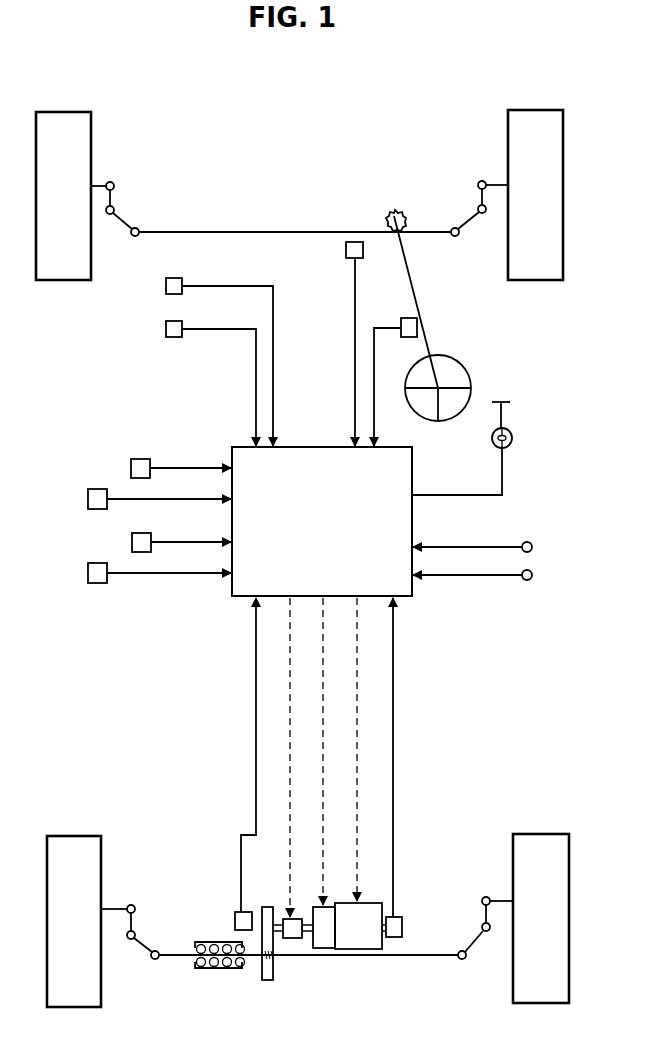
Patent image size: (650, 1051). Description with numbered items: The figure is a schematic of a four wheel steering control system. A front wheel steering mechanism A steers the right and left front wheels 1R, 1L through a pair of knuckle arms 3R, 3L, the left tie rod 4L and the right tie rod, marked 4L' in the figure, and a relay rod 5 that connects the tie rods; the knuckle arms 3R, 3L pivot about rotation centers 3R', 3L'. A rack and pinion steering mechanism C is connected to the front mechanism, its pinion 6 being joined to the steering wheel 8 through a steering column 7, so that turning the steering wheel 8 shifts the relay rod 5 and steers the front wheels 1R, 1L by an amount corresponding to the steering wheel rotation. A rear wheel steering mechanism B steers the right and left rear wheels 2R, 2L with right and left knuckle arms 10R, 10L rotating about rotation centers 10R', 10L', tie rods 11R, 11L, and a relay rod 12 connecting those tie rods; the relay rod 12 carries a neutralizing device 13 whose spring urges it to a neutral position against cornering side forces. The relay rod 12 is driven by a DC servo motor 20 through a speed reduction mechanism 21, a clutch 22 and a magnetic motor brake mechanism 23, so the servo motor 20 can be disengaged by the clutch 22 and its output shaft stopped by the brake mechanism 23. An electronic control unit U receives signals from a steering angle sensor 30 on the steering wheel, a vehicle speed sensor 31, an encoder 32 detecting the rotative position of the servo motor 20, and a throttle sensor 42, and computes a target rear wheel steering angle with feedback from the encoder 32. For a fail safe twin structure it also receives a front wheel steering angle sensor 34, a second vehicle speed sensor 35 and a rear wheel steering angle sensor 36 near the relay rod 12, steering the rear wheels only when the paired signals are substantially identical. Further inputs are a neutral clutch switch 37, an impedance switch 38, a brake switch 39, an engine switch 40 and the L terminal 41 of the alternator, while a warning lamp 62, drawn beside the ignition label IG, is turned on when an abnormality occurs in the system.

The left front wheel 1L is at (76, 112).
The right front wheel 1R is at (530, 110).
The left rear wheel 2L is at (72, 836).
The right rear wheel 2R is at (542, 834).
The knuckle arm 3L is at (140, 192).
The rotation center 3L' is at (129, 154).
The knuckle arm 3R is at (452, 190).
The rotation center 3R' is at (471, 155).
The tie rod 4L is at (149, 219).
The right front tie rod 4L' is at (475, 241).
The relay rod 5 is at (258, 231).
The pinion 6 is at (394, 209).
The steering column 7 is at (417, 292).
The steering wheel 8 is at (470, 368).
The knuckle arm 10L is at (467, 900).
The rotation center 10L' is at (487, 870).
The knuckle arm 10R is at (158, 904).
The rotation center 10R' is at (128, 877).
The tie rod 11L is at (479, 936).
The tie rod 11R is at (140, 946).
The relay rod 12 is at (405, 957).
The neutralizing device 13 is at (217, 976).
The DC servo motor 20 is at (366, 902).
The speed reduction mechanism 21 is at (262, 942).
The clutch 22 is at (292, 940).
The magnetic motor brake mechanism 23 is at (327, 950).
The steering angle sensor 30 is at (404, 318).
The vehicle speed sensor 31 is at (185, 278).
The encoder 32 is at (404, 916).
The front wheel steering angle sensor 34 is at (345, 250).
The second vehicle speed sensor 35 is at (175, 338).
The rear wheel steering angle sensor 36 is at (235, 918).
The neutral clutch switch 37 is at (150, 460).
The impedance switch 38 is at (96, 489).
The brake switch 39 is at (132, 542).
The engine switch 40 is at (87, 584).
The L terminal 41 is at (533, 547).
The throttle sensor 42 is at (533, 575).
The warning lamp 62 is at (513, 440).
The front wheel steering mechanism A is at (315, 190).
The rear wheel steering mechanism B is at (435, 963).
The steering mechanism C is at (440, 342).
The electronic control unit U is at (334, 575).
The ignition switch IG is at (513, 404).